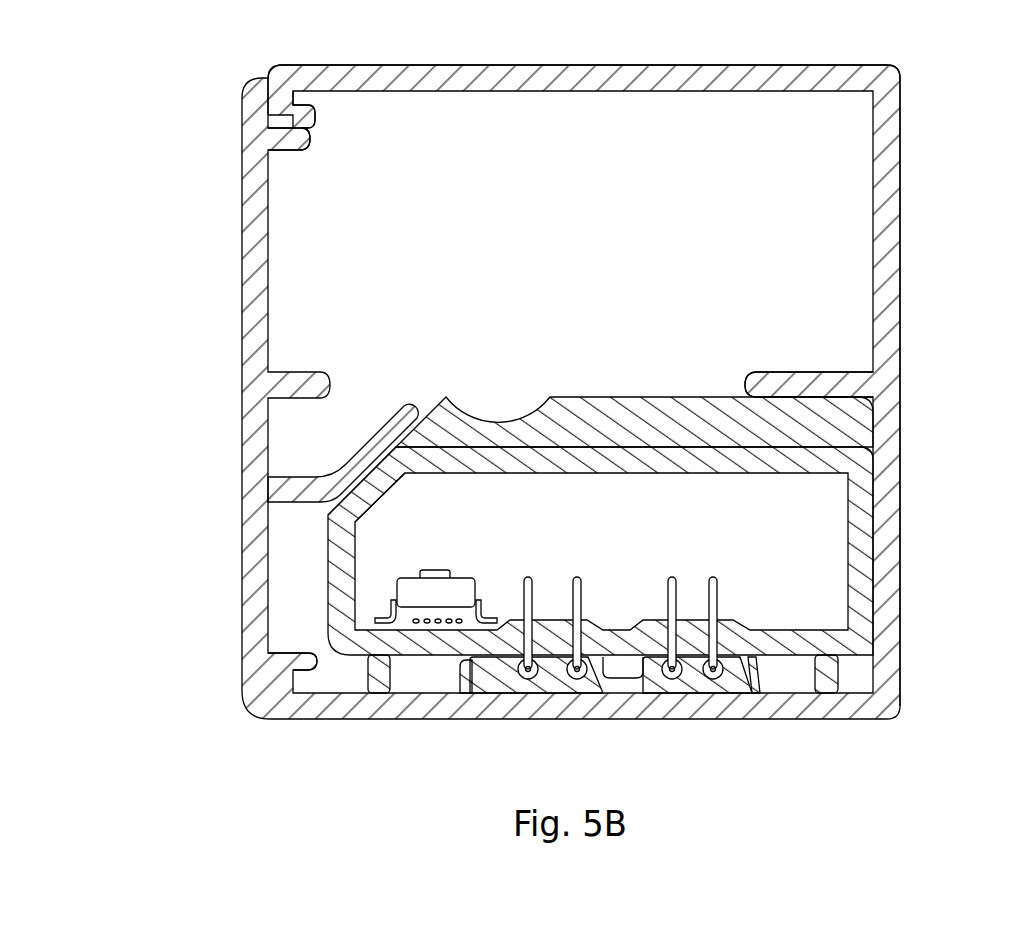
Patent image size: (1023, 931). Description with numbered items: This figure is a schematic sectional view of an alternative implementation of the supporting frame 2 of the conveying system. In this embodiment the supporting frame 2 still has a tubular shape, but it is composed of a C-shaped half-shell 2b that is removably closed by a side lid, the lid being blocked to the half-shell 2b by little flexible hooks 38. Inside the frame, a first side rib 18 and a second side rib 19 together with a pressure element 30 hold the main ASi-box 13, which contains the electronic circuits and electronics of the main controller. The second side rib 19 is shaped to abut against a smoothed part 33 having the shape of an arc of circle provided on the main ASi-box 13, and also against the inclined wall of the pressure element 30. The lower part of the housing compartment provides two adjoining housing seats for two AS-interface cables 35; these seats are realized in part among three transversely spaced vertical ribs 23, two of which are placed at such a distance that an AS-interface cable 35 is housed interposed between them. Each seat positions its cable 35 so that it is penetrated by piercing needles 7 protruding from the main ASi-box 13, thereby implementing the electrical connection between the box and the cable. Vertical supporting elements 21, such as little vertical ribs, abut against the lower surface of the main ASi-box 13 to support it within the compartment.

The supporting frame 2 is at (787, 65).
The half-shell 2b is at (242, 120).
The little flexible hooks 38 is at (303, 133).
The first side rib 18 is at (813, 372).
The second side rib 19 is at (383, 437).
The smoothed part 33 is at (334, 508).
The pressure element 30 is at (634, 410).
The main ASi-box 13 is at (827, 508).
The vertical supporting elements 21 is at (375, 657).
The vertical ribs 23 is at (465, 672).
The AS-interface cable 35 is at (550, 680).
The piercing needles 7 is at (537, 593).